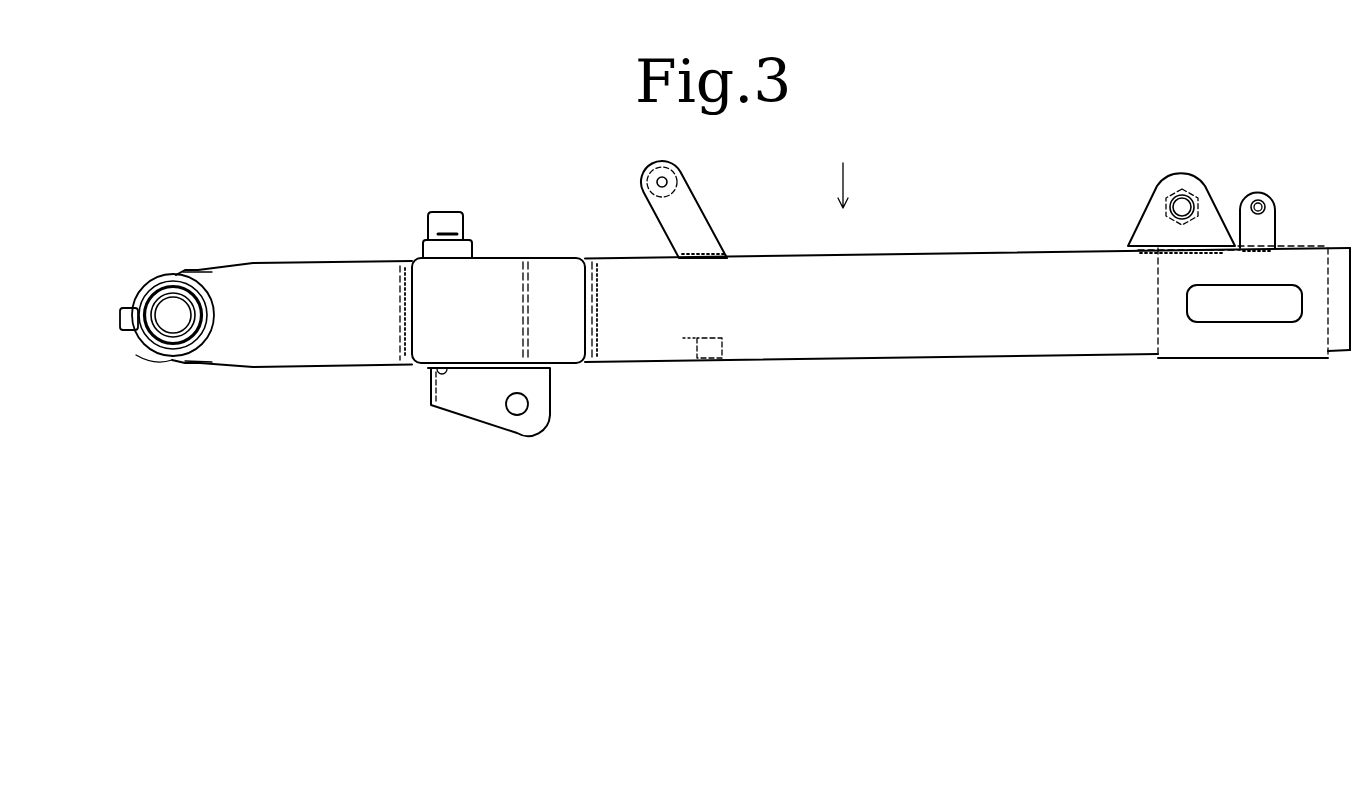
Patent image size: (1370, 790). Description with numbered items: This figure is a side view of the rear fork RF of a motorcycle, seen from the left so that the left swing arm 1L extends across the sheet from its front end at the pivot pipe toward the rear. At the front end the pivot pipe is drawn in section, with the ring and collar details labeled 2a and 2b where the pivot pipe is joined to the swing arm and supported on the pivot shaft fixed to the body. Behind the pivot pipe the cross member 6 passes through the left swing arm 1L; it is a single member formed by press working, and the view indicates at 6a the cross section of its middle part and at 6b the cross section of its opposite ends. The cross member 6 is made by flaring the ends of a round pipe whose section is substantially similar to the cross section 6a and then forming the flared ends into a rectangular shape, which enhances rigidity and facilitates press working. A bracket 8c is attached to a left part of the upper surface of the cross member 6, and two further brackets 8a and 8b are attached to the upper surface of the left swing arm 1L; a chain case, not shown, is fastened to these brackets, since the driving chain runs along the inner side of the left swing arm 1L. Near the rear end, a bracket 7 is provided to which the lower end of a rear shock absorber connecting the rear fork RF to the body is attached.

The left swing arm 1L is at (828, 348).
The pivot boss 2a is at (142, 283).
The pivot collar 2b is at (148, 355).
The cross member 6 is at (550, 255).
The cross section of the middle part of the cross member 6a is at (528, 320).
The cross section of the opposite ends of the cross member 6b is at (598, 308).
The bracket 7 is at (1147, 202).
The bracket 8a is at (1270, 193).
The bracket 8b is at (705, 212).
The bracket 8c is at (448, 218).
The rear fork RF is at (838, 168).